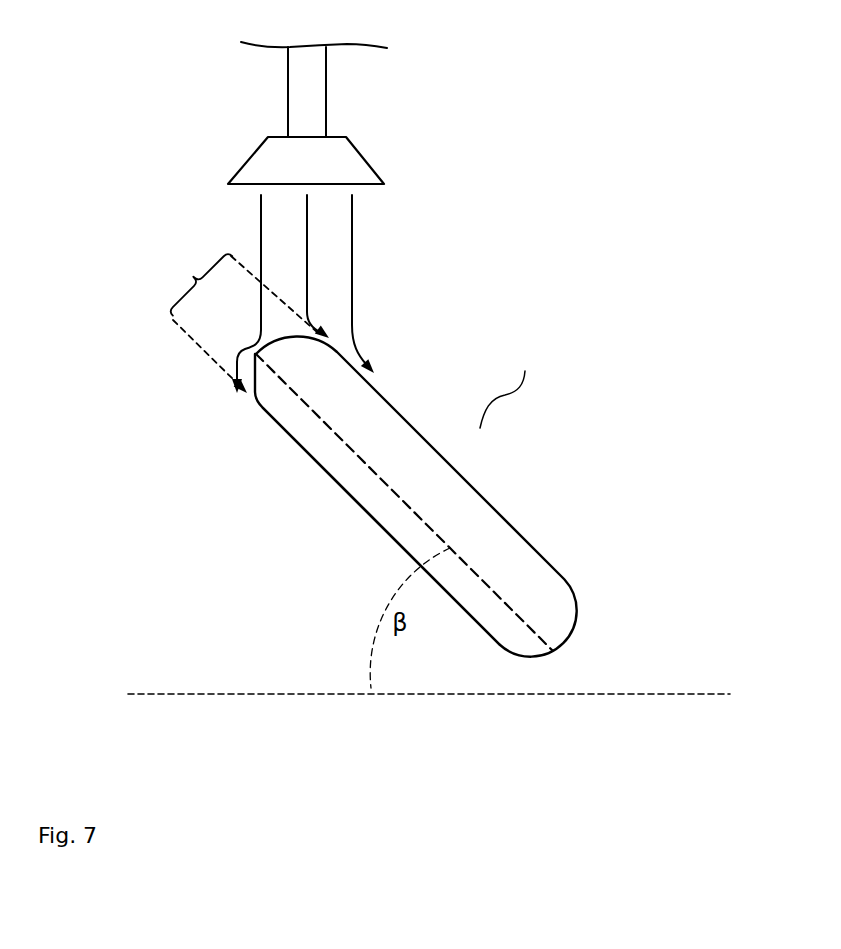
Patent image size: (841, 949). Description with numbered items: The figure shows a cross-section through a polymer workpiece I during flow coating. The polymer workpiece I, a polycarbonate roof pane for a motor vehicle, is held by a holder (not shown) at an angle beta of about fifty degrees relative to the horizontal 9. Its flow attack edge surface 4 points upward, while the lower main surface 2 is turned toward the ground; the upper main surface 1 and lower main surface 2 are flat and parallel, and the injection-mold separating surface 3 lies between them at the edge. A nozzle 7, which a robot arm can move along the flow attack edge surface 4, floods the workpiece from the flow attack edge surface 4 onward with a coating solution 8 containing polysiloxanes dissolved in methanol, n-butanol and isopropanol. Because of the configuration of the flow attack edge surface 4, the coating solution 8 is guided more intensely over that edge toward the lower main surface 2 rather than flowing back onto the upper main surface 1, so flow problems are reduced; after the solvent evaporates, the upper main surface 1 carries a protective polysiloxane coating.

The upper main surface 1 is at (485, 498).
The lower main surface 2 is at (362, 513).
The injection-mold separating surface 3 is at (483, 578).
The flow attack edge surface 4 is at (238, 316).
The nozzle 7 is at (342, 156).
The coating solution 8 is at (352, 247).
The horizontal 9 is at (652, 694).
The polymer workpiece I is at (510, 387).